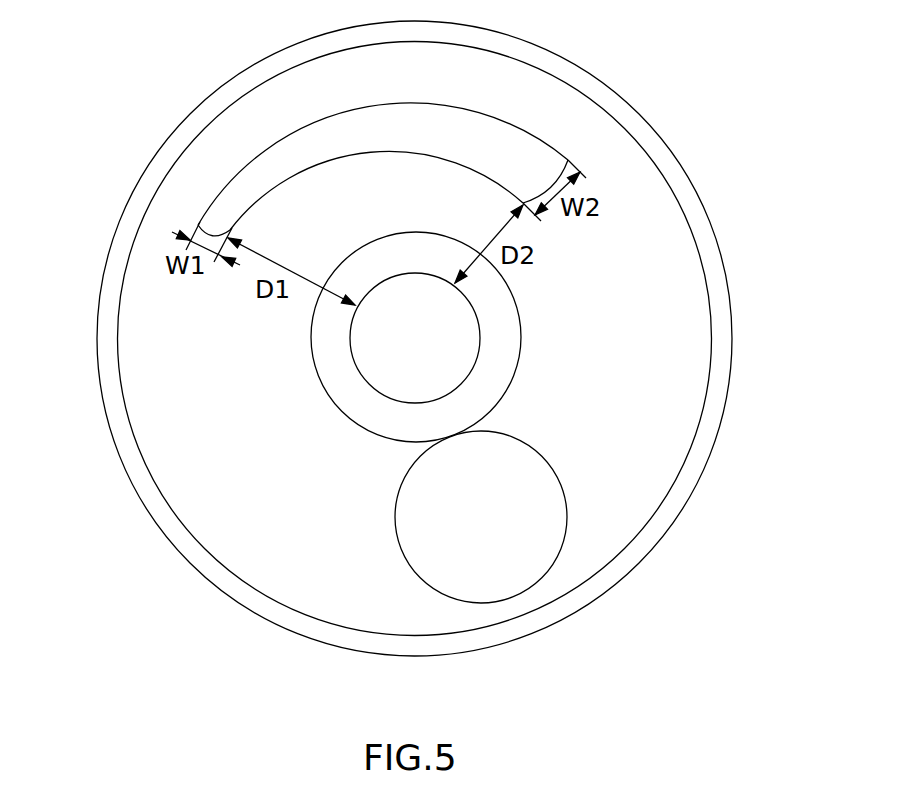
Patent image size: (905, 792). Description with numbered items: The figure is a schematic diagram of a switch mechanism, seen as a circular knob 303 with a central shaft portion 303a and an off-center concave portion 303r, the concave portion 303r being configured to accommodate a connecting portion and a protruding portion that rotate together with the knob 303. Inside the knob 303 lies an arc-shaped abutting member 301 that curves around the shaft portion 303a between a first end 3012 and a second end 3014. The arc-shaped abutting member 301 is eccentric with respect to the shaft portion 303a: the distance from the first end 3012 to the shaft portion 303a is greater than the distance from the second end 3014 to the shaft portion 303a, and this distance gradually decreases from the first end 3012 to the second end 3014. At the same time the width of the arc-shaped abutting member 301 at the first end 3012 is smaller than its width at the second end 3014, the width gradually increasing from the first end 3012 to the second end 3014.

The knob 303 is at (683, 164).
The arc-shaped abutting member 301 is at (393, 120).
The first end 3012 is at (227, 220).
The second end 3014 is at (523, 165).
The shaft portion 303a is at (392, 355).
The concave portion 303r is at (525, 445).